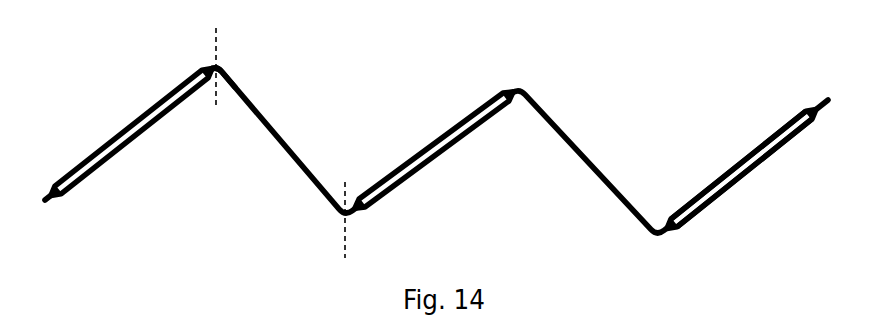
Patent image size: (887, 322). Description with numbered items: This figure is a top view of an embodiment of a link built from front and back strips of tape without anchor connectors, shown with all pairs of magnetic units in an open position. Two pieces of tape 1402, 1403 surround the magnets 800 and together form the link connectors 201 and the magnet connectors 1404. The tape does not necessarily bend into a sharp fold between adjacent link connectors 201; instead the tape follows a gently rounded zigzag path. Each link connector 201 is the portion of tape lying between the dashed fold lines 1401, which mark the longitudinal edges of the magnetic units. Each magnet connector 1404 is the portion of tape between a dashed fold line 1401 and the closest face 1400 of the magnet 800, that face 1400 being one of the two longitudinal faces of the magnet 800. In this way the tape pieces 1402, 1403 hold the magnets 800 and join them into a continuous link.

The link connectors 201 is at (278, 128).
The magnets 800 is at (757, 161).
The face of the magnet 1400 is at (193, 68).
The dashed fold lines 1401 is at (345, 222).
The piece of tape 1402 is at (713, 193).
The piece of tape 1403 is at (712, 211).
The magnet connectors 1404 is at (205, 74).